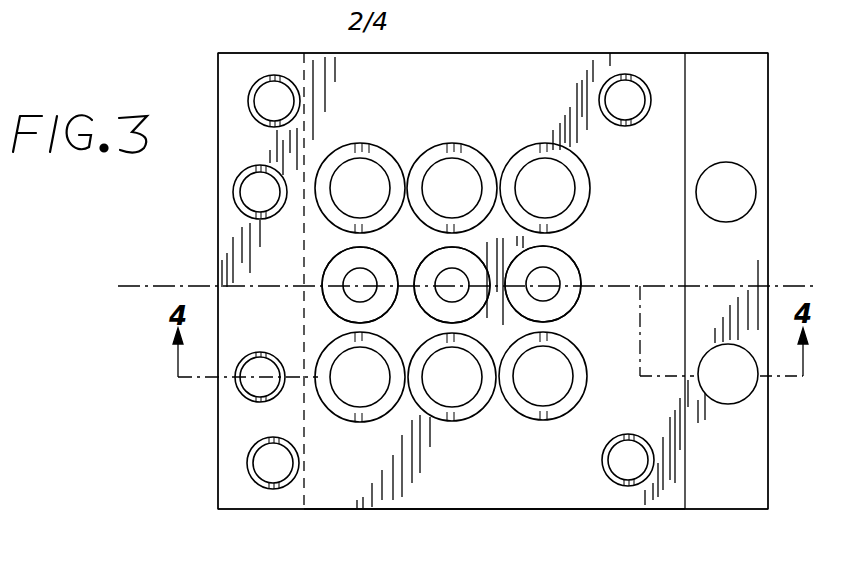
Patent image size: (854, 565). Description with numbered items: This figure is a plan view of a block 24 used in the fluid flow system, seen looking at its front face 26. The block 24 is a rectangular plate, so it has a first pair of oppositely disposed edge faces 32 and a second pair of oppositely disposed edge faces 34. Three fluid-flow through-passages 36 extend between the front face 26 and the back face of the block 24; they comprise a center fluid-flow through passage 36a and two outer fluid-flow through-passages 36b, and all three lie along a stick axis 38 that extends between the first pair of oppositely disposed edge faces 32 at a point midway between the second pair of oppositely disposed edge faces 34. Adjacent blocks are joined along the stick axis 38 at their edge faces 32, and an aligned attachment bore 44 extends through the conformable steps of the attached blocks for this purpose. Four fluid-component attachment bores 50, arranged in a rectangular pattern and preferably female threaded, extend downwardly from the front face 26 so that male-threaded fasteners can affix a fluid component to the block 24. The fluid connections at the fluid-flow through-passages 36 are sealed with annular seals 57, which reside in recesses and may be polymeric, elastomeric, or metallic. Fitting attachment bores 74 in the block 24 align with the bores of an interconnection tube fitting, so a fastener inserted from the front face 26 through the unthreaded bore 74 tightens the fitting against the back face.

The block 24 is at (258, 53).
The front face 26 is at (472, 486).
The first pair of oppositely disposed edge faces 32 is at (216, 223).
The second pair of oppositely disposed edge faces 34 is at (528, 53).
The fluid-flow through-passages 36 is at (562, 317).
The center fluid-flow through passage 36a is at (440, 272).
The outer fluid-flow through-passages 36b is at (345, 272).
The stick axis 38 is at (145, 289).
The attachment bore 44 is at (233, 190).
The fluid-component attachment bores 50 is at (248, 99).
The annular seals 57 is at (377, 302).
The fitting attachment bores 74 is at (445, 147).